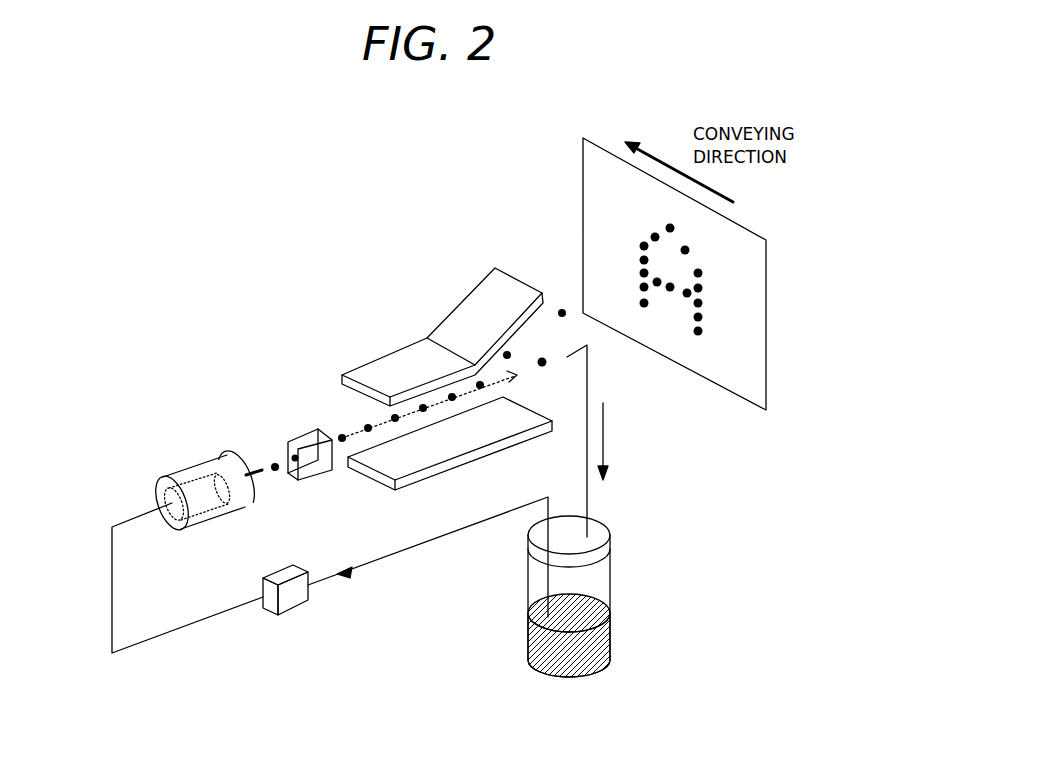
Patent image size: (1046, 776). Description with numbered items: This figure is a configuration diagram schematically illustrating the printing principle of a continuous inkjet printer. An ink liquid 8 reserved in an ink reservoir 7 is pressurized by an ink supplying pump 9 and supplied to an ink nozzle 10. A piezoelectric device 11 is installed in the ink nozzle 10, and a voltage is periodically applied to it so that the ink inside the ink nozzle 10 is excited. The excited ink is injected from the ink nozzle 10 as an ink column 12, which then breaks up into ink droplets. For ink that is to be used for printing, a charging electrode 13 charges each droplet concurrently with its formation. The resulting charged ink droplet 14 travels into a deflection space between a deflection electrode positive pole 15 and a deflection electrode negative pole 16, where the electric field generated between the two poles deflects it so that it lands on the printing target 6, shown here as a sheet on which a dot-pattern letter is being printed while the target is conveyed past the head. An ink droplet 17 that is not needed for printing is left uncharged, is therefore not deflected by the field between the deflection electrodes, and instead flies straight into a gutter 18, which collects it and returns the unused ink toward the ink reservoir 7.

The printing target 6 is at (587, 188).
The ink reservoir 7 is at (588, 580).
The ink liquid 8 is at (527, 645).
The ink supplying pump 9 is at (288, 600).
The ink nozzle 10 is at (228, 463).
The piezoelectric device 11 is at (197, 508).
The ink column 12 is at (259, 481).
The charging electrode 13 is at (302, 452).
The charged ink droplet 14 is at (562, 311).
The deflection electrode positive pole 15 is at (475, 322).
The deflection electrode negative pole 16 is at (487, 427).
The ink droplet 17 is at (545, 370).
The gutter 18 is at (588, 377).